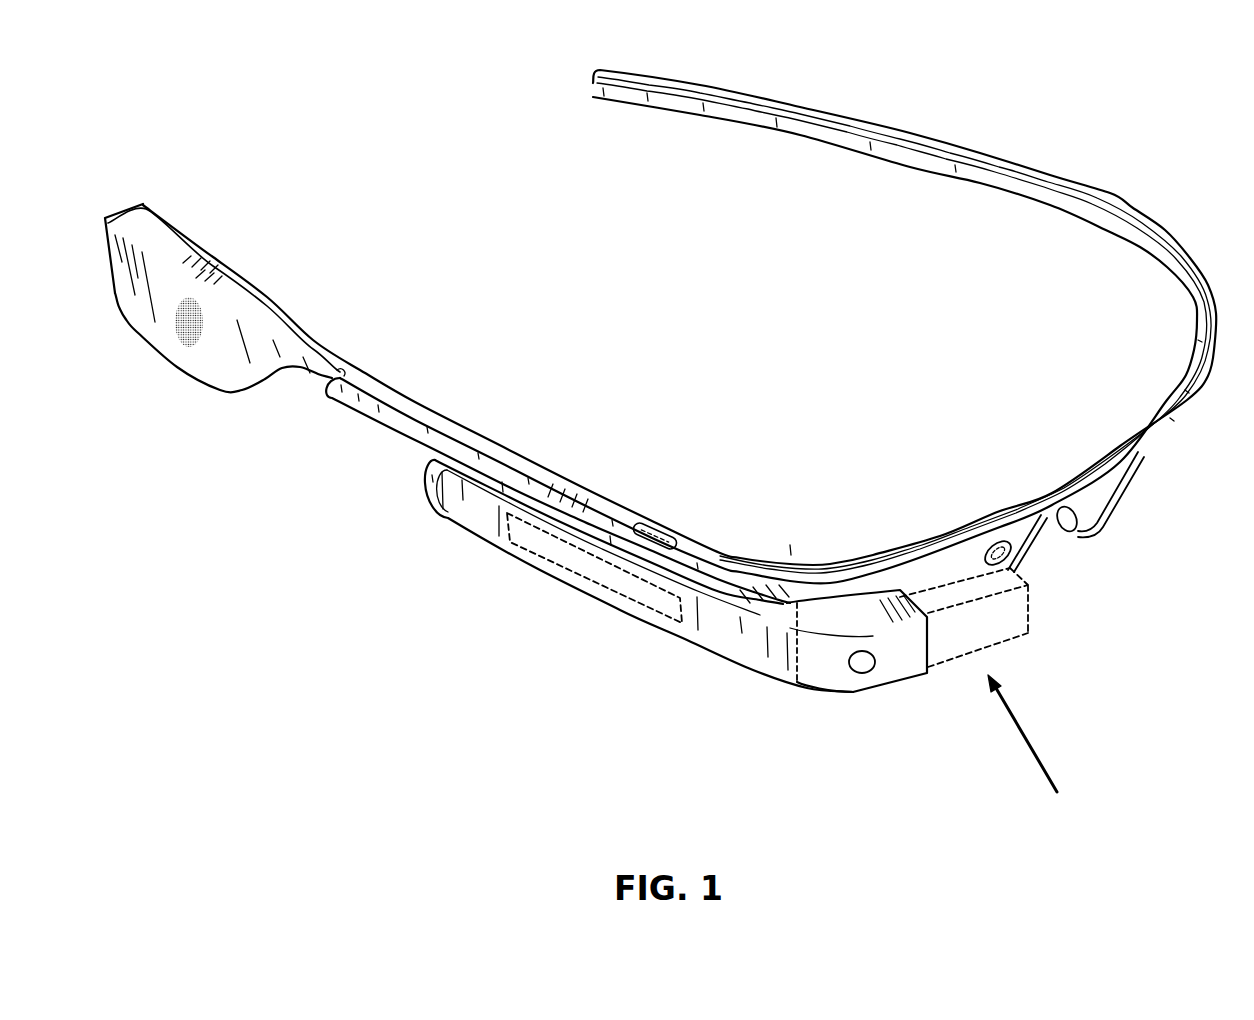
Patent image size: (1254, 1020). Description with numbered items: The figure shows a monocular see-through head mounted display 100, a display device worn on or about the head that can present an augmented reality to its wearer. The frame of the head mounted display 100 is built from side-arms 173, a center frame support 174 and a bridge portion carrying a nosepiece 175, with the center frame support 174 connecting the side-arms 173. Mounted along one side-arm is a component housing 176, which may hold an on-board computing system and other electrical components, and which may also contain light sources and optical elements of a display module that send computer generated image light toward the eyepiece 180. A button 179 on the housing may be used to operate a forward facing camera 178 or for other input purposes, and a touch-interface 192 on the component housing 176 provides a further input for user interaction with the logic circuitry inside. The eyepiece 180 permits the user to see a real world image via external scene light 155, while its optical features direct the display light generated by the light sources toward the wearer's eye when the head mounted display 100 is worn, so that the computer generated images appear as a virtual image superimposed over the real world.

The head mounted display 100 is at (1030, 103).
The side-arms 173 is at (800, 107).
The center frame support 174 is at (1052, 493).
The nosepiece 175 is at (1100, 510).
The component housing 176 is at (565, 583).
The forward facing camera 178 is at (857, 680).
The button 179 is at (640, 527).
The eyepiece 180 is at (1018, 635).
The touch-interface 192 is at (632, 585).
The external scene light 155 is at (1050, 773).